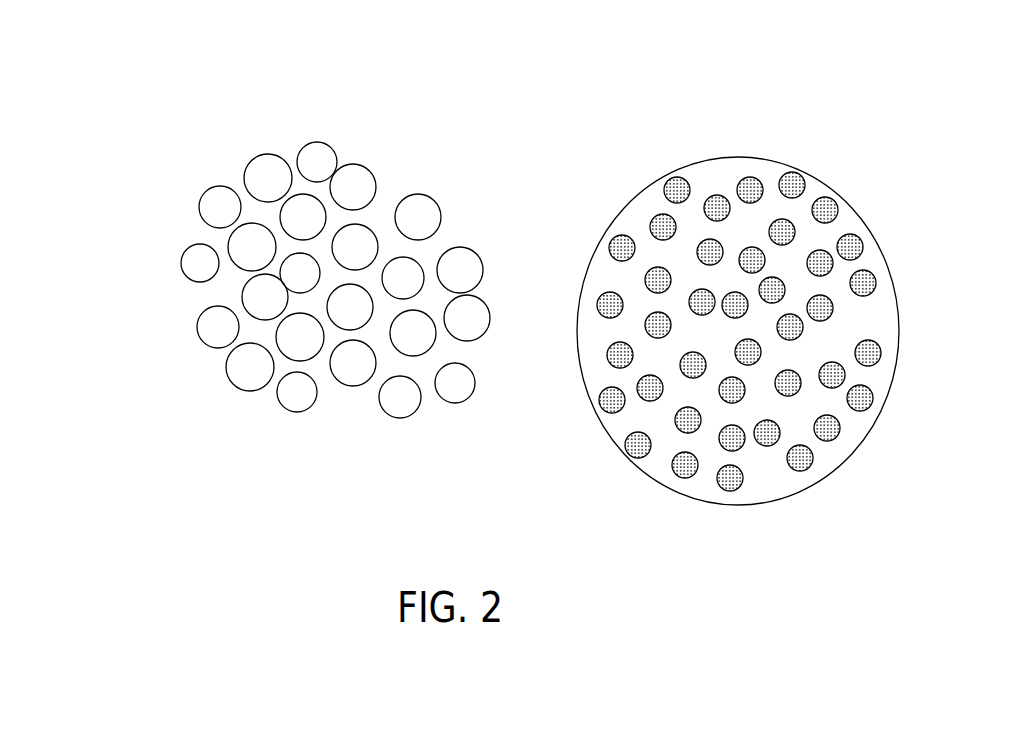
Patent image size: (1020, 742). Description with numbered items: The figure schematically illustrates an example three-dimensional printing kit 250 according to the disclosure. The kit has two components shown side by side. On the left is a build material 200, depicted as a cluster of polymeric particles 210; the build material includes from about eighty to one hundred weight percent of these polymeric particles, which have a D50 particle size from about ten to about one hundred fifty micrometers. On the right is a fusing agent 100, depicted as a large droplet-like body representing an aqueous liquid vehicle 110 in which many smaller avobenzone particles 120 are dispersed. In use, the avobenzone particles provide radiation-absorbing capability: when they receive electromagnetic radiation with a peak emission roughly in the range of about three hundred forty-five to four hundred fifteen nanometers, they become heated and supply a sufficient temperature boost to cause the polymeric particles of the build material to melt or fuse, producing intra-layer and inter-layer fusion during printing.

The three-dimensional printing kit 250 is at (168, 61).
The build material 200 is at (234, 143).
The polymeric particles 210 is at (248, 367).
The fusing agent 100 is at (604, 160).
The aqueous liquid vehicle 110 is at (703, 482).
The avobenzone particles 120 is at (747, 178).